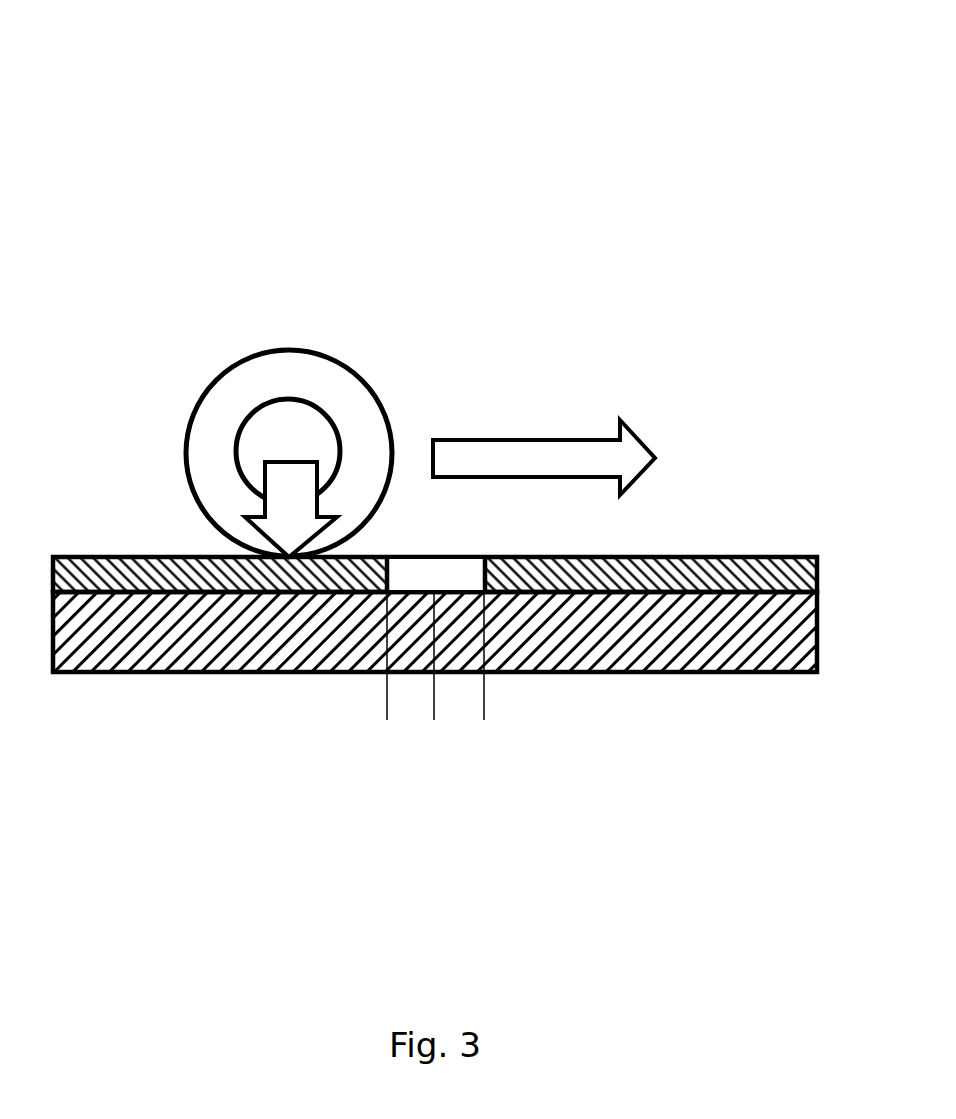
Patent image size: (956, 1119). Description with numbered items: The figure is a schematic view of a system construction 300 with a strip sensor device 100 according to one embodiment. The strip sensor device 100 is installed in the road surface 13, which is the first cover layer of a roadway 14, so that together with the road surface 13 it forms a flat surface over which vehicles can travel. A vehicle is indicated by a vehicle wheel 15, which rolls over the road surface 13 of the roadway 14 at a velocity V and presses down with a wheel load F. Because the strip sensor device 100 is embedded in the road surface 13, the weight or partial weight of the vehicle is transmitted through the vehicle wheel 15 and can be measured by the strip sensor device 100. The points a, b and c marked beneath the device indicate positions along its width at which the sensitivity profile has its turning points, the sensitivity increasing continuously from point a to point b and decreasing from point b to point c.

The system construction 300 is at (306, 118).
The vehicle wheel 15 is at (238, 398).
The strip sensor device 100 is at (416, 546).
The road surface 13 is at (642, 575).
The roadway 14 is at (605, 637).